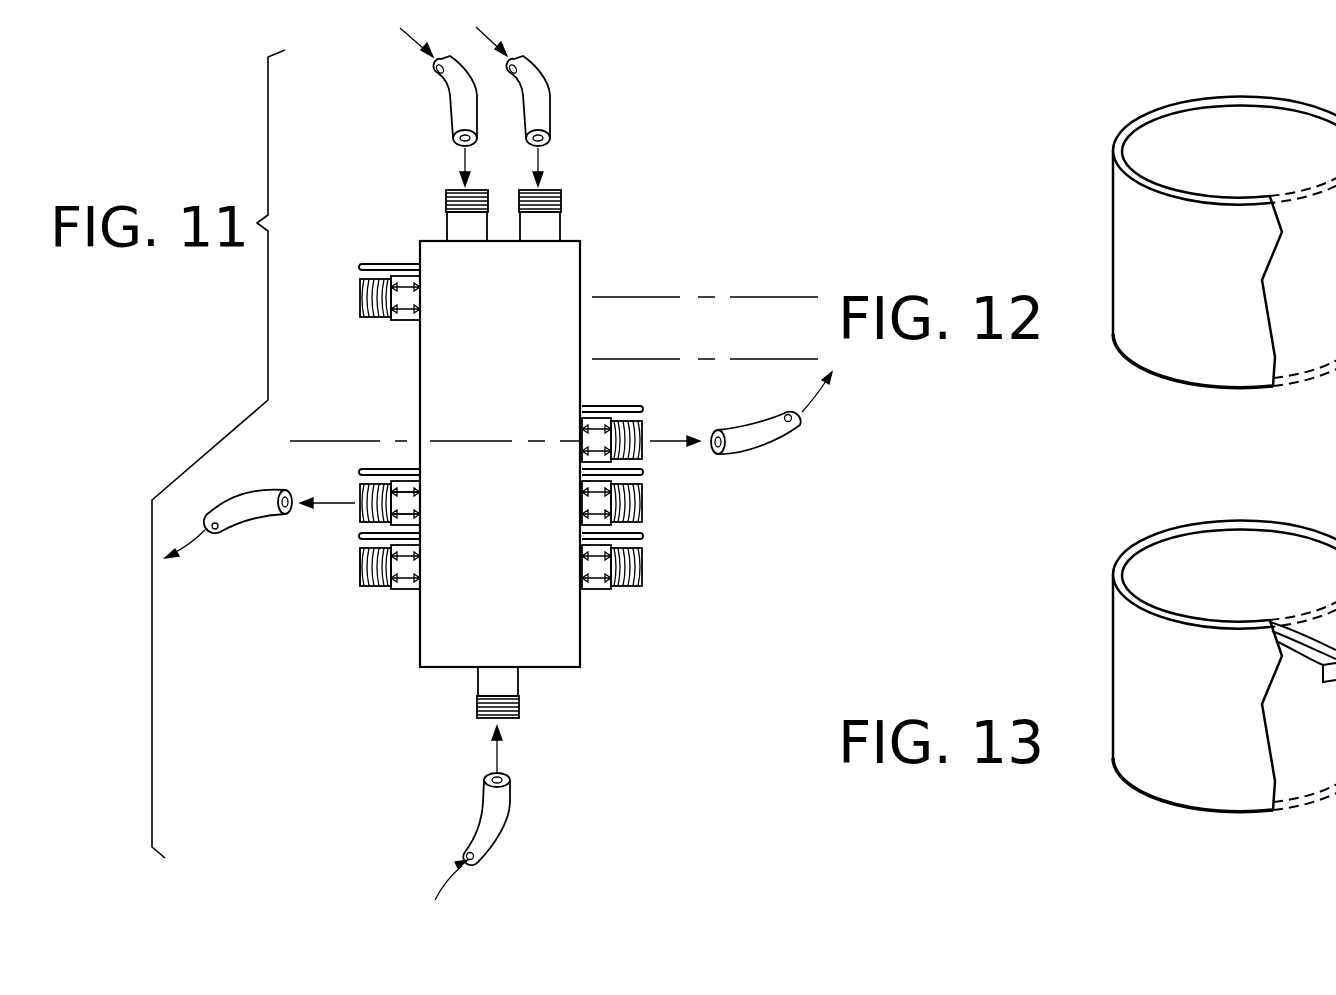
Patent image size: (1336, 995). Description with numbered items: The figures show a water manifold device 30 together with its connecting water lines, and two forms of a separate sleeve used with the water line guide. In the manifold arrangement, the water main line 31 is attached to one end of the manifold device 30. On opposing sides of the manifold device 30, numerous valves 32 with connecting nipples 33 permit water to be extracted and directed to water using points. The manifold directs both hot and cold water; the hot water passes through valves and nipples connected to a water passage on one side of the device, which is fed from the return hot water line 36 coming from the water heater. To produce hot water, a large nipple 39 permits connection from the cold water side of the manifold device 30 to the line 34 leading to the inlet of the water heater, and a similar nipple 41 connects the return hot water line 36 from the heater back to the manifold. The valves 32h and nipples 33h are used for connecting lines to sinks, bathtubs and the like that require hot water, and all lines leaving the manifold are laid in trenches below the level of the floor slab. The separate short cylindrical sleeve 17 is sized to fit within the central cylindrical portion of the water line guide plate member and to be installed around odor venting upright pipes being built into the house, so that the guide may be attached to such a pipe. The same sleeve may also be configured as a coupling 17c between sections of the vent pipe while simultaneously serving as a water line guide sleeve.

In FIG. 11, the manifold device 30 is at (582, 283).
In FIG. 11, the water main line 31 is at (493, 823).
In FIG. 11, the valve 32 is at (373, 440).
In FIG. 11, the hot water valve 32h is at (409, 503).
In FIG. 11, the connecting nipple 33 is at (357, 512).
In FIG. 11, the hot water nipple 33h is at (358, 541).
In FIG. 11, the water heater inlet line 34 is at (538, 92).
In FIG. 11, the return hot water line 36 is at (457, 93).
In FIG. 11, the large nipple 39 is at (562, 203).
In FIG. 11, the nipple 41 is at (447, 205).
In FIG. 12, the cylindrical sleeve 17 is at (1128, 267).
In FIG. 13, the coupling 17c is at (1137, 692).